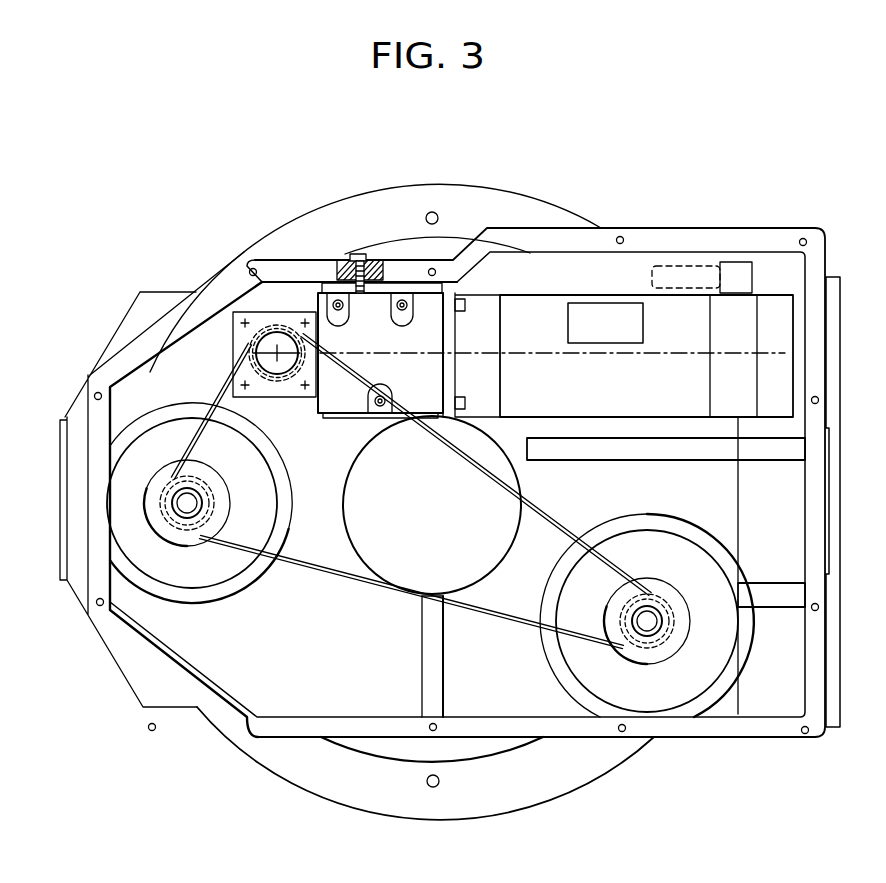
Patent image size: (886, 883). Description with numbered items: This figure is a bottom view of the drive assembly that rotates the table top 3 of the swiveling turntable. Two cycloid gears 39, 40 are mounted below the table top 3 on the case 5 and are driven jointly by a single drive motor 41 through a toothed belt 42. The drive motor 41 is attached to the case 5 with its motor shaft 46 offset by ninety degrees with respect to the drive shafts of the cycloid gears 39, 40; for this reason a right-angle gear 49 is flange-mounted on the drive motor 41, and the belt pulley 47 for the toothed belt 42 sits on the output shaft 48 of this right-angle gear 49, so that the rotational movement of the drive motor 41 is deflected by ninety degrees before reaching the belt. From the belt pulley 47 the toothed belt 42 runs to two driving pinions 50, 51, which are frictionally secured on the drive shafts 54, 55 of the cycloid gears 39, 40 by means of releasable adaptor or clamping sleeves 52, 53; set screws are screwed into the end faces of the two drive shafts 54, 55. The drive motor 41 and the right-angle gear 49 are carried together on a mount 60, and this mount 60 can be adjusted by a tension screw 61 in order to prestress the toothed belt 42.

The table top 3 is at (477, 210).
The case 5 is at (645, 238).
The cycloid gear 39 is at (130, 548).
The cycloid gear 40 is at (707, 665).
The drive motor 41 is at (690, 310).
The toothed belt 42 is at (378, 586).
The motor shaft 46 is at (540, 357).
The belt pulley 47 is at (264, 328).
The output shaft 48 is at (250, 345).
The right-angle gear 49 is at (307, 290).
The driving pinion 50 is at (155, 500).
The driving pinion 51 is at (662, 660).
The clamping sleeve 52 is at (205, 512).
The clamping sleeve 53 is at (618, 620).
The drive shaft 54 is at (192, 503).
The drive shaft 55 is at (648, 620).
The mount 60 is at (385, 293).
The tension screw 61 is at (360, 254).